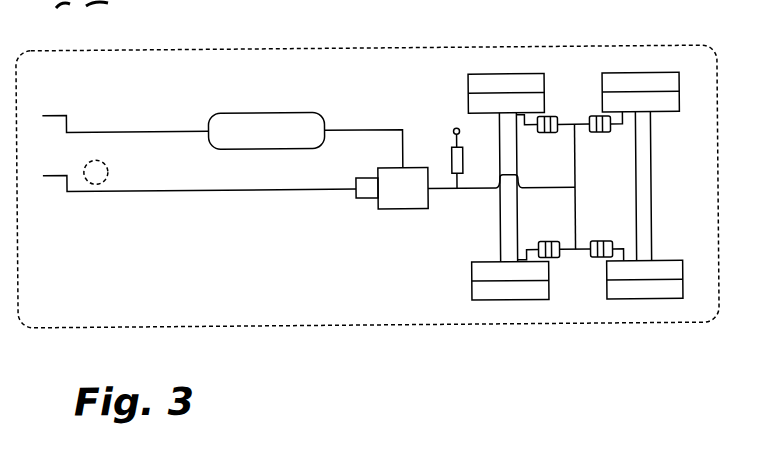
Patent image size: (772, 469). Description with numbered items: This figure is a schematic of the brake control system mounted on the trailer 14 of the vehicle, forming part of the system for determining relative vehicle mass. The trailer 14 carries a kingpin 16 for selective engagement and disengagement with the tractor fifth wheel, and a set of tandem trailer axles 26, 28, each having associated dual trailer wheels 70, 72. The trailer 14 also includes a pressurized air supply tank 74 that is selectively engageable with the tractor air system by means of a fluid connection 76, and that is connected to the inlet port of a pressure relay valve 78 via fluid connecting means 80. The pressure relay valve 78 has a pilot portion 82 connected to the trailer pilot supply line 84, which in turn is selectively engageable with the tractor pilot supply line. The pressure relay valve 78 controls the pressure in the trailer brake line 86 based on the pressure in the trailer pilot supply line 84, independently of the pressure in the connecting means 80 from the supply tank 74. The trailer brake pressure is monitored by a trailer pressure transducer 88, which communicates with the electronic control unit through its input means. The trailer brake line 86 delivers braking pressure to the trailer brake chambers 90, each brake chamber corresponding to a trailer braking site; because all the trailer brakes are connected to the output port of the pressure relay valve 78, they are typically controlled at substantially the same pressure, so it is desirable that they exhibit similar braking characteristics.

The trailer 14 is at (377, 327).
The kingpin 16 is at (107, 173).
The tandem trailer axle 26 is at (483, 73).
The tandem trailer axle 28 is at (632, 72).
The dual trailer wheels 70 is at (482, 300).
The dual trailer wheels 72 is at (622, 295).
The pressurized air supply tank 74 is at (213, 113).
The fluid connection 76 is at (68, 130).
The pressure relay valve 78 is at (395, 200).
The fluid connecting means 80 is at (408, 133).
The pilot portion 82 is at (359, 199).
The trailer pilot supply line 84 is at (67, 189).
The trailer brake line 86 is at (450, 190).
The trailer pressure transducer 88 is at (451, 150).
The trailer brake chambers 90 is at (551, 116).